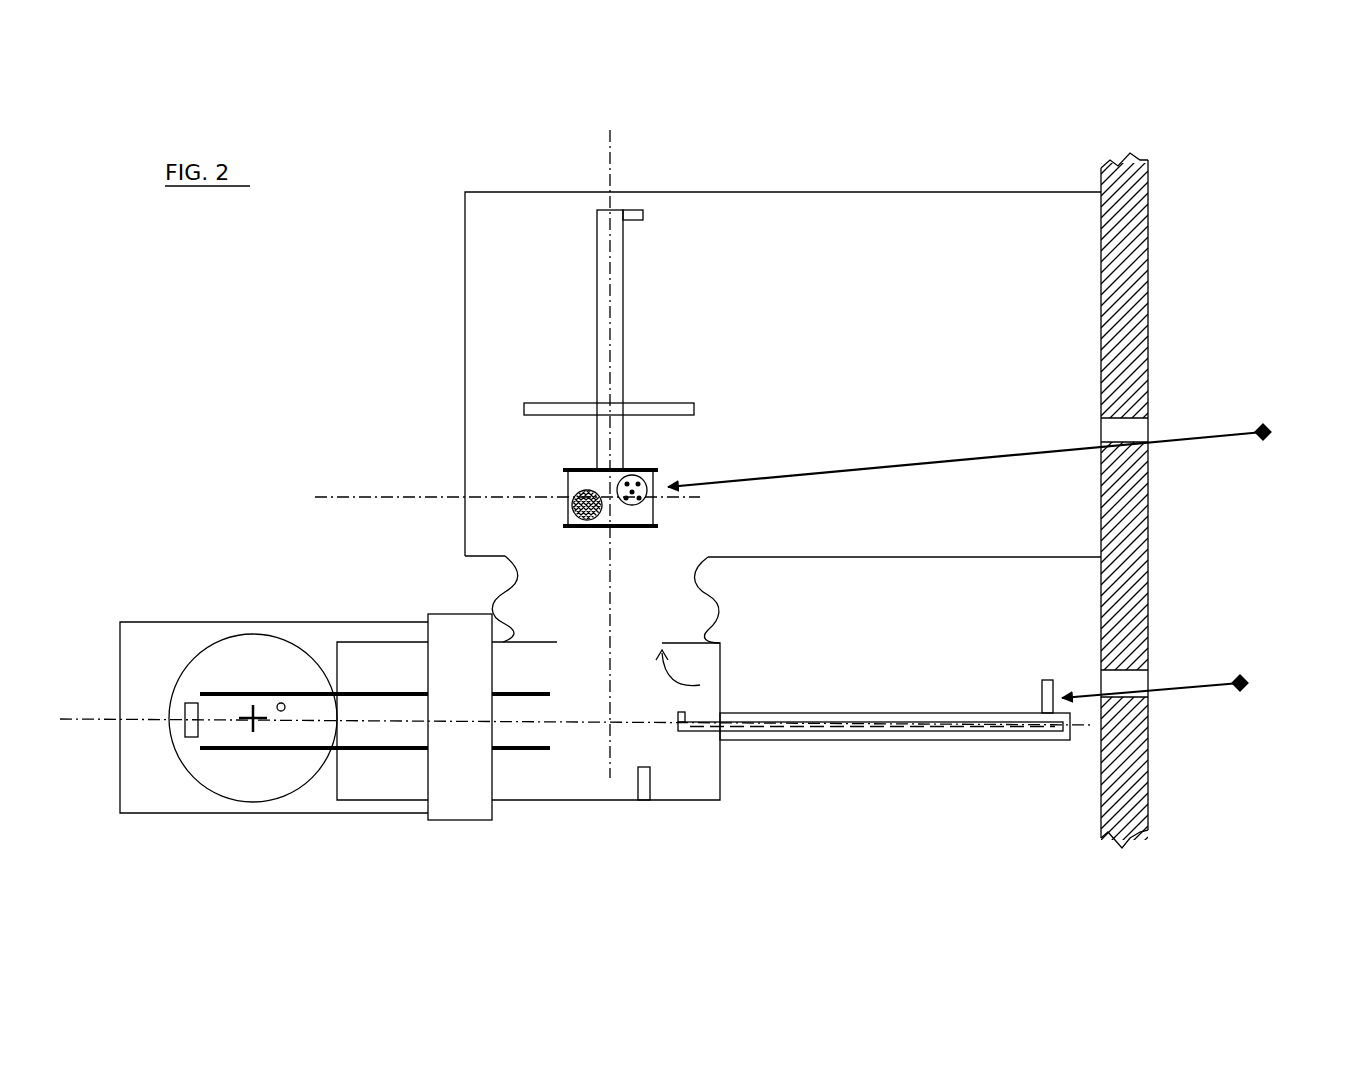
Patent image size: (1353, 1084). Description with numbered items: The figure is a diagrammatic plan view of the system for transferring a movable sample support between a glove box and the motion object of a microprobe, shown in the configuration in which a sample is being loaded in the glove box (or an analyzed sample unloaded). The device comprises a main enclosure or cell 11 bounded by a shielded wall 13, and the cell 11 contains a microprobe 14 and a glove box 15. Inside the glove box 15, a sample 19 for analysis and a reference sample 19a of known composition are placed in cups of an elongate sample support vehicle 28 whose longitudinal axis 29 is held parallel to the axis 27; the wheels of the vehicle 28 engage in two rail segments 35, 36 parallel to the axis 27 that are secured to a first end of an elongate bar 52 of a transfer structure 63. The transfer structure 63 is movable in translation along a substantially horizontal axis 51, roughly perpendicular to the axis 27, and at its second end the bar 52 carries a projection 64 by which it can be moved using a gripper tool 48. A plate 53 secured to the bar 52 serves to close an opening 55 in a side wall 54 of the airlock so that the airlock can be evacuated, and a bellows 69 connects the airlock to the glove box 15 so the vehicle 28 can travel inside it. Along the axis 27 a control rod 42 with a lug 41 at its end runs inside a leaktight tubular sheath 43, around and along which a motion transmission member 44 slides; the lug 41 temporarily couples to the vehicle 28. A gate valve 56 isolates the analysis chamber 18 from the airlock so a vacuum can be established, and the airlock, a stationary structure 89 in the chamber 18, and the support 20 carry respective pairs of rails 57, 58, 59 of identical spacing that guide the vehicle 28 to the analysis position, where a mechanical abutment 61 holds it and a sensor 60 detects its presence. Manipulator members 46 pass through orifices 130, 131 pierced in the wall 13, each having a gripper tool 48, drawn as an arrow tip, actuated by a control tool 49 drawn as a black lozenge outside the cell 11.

The main enclosure 11 is at (246, 350).
The shielded wall 13 is at (1150, 522).
The microprobe 14 is at (220, 640).
The glove box 15 is at (934, 298).
The analysis chamber 18 is at (172, 810).
The sample 19 is at (632, 476).
The reference sample 19a is at (577, 497).
The support 20 is at (302, 790).
The axis 27 is at (80, 730).
The sample support vehicle 28 is at (655, 512).
The longitudinal axis 29 is at (342, 492).
The rail segment 35 is at (650, 530).
The rail segment 36 is at (660, 470).
The lug 41 is at (687, 716).
The control rod 42 is at (850, 722).
The tubular sheath 43 is at (880, 742).
The motion transmission member 44 is at (1040, 695).
The manipulator member 46 is at (1264, 408).
The gripper tool 48 is at (1073, 680).
The control tool 49 is at (1252, 665).
The axis 51 is at (612, 158).
The elongate bar 52 is at (622, 318).
The plate 53 is at (538, 400).
The side wall 54 is at (685, 636).
The opening 55 is at (700, 686).
The gate valve 56 is at (465, 808).
The rails 57 is at (540, 752).
The rails 58 is at (392, 752).
The rails 59 is at (245, 752).
The sensor 60 is at (182, 712).
The mechanical abutment 61 is at (285, 704).
The transfer structure 63 is at (700, 295).
The projection 64 is at (645, 215).
The bellows 69 is at (705, 625).
The stationary structure 89 is at (412, 802).
The orifice 130 is at (1130, 432).
The orifice 131 is at (1130, 682).